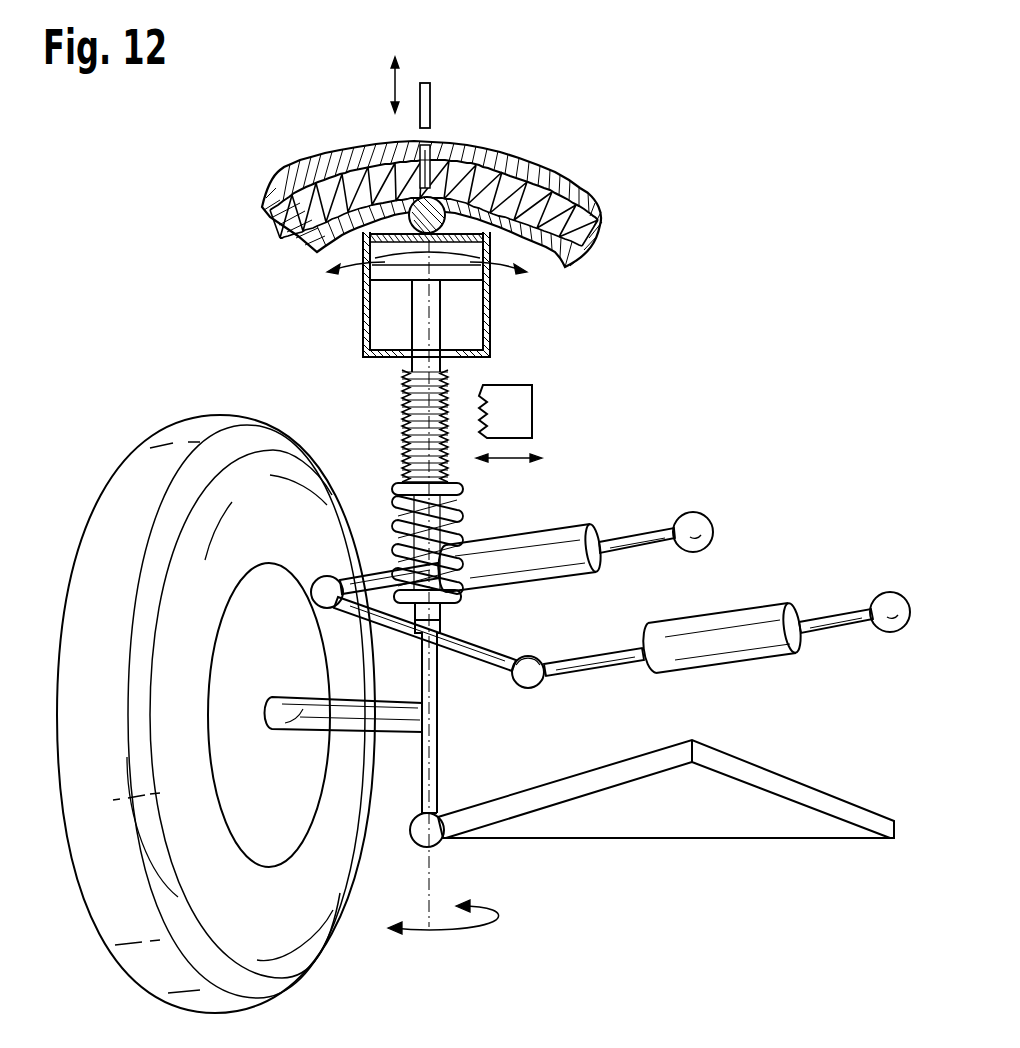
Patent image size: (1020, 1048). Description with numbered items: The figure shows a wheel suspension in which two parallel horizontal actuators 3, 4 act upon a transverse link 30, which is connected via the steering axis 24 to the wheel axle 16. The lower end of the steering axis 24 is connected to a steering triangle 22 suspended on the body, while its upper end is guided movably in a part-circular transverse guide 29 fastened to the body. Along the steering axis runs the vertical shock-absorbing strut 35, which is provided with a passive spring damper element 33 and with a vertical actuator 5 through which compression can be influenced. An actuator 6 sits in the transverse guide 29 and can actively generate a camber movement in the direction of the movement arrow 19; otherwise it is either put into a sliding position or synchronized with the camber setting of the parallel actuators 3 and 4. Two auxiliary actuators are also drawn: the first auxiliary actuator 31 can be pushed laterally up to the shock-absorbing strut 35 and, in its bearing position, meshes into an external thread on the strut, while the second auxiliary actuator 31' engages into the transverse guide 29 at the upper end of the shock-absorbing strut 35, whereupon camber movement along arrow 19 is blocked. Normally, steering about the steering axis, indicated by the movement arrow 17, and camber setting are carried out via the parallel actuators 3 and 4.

The horizontal actuator 3 is at (745, 627).
The horizontal actuator 4 is at (550, 547).
The vertical actuator 5 is at (367, 320).
The actuator in the transverse guide 6 is at (318, 166).
The wheel axle 16 is at (310, 712).
The movement arrow 17 is at (459, 925).
The movement arrow 19 is at (511, 276).
The steering triangle 22 is at (683, 824).
The steering axis 24 is at (436, 700).
The transverse guide 29 is at (570, 207).
The transverse link 30 is at (471, 645).
The first auxiliary actuator 31 is at (543, 423).
The second auxiliary actuator 31' is at (456, 92).
The passive spring damper element 33 is at (392, 497).
The shock-absorbing strut 35 is at (417, 360).